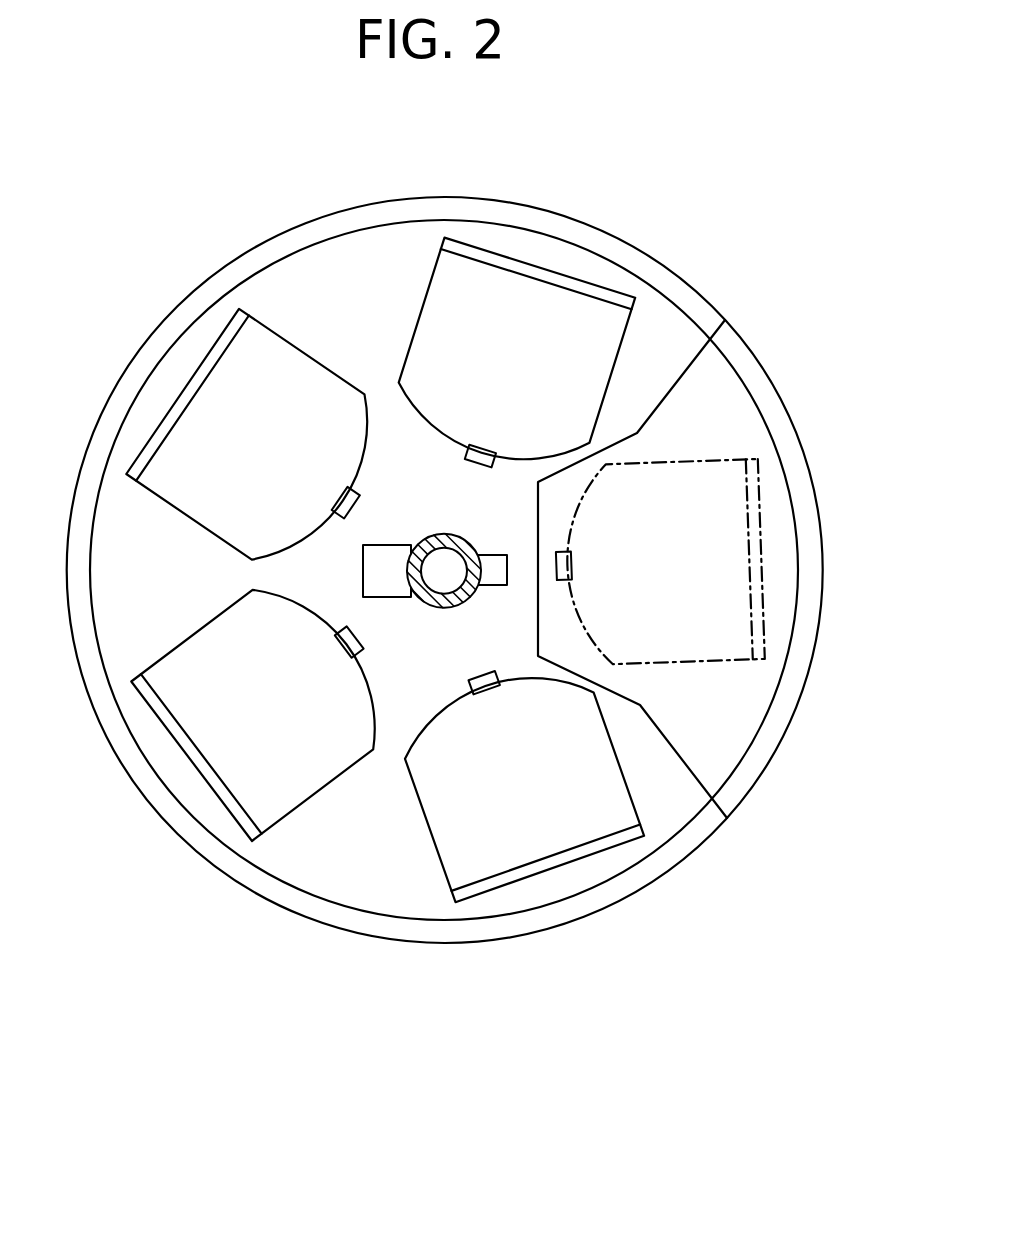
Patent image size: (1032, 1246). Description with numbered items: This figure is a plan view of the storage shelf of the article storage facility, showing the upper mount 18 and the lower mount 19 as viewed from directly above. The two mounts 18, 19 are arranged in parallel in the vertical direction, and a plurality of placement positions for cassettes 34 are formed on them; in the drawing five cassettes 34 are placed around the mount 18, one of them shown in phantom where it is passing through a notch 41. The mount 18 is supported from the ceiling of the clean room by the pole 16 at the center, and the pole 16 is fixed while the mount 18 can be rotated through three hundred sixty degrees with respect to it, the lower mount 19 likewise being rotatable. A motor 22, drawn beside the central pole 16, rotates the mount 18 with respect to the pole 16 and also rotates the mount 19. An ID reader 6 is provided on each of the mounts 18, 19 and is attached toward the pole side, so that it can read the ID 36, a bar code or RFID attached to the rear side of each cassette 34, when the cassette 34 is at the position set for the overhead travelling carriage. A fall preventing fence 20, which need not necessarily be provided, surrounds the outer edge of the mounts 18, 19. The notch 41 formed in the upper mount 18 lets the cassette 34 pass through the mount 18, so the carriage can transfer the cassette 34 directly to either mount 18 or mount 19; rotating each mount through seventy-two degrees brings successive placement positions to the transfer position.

The mount 18 is at (443, 1000).
The mount 19 is at (811, 730).
The fall preventing fence 20 is at (805, 527).
The motor 22 is at (363, 574).
The ID reader 6 is at (495, 575).
The pole 16 is at (465, 537).
The cassette 34 is at (536, 324).
The ID 36 is at (488, 470).
The notch 41 is at (715, 400).